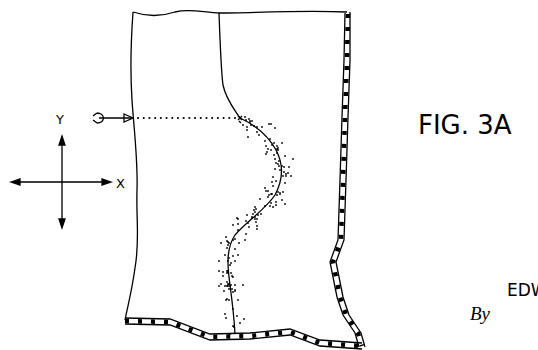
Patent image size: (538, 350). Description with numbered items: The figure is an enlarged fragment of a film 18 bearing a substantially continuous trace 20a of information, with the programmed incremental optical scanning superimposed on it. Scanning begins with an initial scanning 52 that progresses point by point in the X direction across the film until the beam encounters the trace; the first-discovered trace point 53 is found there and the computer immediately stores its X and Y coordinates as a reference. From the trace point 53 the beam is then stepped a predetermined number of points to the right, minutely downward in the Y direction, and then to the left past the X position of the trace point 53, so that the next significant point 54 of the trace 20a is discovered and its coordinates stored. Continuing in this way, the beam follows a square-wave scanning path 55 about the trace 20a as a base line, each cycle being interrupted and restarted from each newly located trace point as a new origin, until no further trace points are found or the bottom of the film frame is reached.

The film 18 is at (351, 78).
The trace 20a is at (223, 68).
The initial scanning 52 is at (178, 117).
The first-discovered trace point 53 is at (240, 118).
The next significant point 54 is at (240, 122).
The square-wave scanning path 55 is at (287, 177).